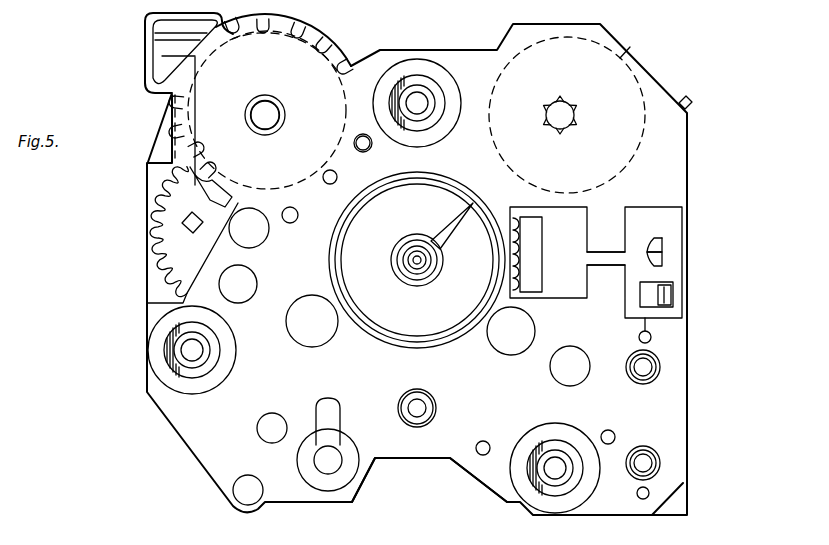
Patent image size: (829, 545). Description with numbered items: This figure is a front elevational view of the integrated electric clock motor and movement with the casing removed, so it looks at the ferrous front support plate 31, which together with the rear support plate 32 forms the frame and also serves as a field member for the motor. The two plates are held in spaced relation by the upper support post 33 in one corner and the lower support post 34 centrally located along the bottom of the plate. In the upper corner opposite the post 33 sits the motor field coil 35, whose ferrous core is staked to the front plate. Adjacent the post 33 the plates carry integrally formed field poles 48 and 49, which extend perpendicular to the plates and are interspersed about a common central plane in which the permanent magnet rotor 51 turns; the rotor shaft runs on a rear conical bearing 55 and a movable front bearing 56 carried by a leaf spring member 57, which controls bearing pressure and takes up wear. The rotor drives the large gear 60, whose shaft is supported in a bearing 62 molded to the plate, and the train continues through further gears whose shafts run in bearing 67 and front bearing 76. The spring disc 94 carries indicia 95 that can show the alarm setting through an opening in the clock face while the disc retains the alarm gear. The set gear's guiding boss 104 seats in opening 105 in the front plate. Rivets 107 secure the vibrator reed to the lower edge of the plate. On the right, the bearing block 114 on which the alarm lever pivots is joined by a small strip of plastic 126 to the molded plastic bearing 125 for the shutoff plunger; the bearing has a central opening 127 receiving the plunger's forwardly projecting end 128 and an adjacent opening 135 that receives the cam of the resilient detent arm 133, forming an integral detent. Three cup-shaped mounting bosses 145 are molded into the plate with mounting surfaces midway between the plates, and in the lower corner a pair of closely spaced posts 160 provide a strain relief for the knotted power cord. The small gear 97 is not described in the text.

The front support plate 31 is at (679, 132).
The rear support plate 32 is at (422, 488).
The upper support post 33 is at (163, 60).
The lower support post 34 is at (322, 473).
The motor field coil 35 is at (626, 51).
The field poles 48 is at (193, 147).
The field poles 49 is at (170, 132).
The permanent magnet rotor 51 is at (365, 152).
The rear conical bearing 55 is at (263, 96).
The movable bearing 56 is at (262, 134).
The leaf spring member 57 is at (245, 108).
The large gear 60 is at (180, 243).
The bearing 62 is at (264, 246).
The bearing 67 is at (317, 332).
The front bearing 76 is at (503, 340).
The spring disc 94 is at (397, 326).
The indicia 95 is at (452, 223).
The pinion 97 is at (565, 122).
The guiding boss 104 is at (426, 410).
The opening 105 is at (418, 426).
The rivets 107 is at (648, 455).
The bearing block 114 is at (565, 297).
The plastic bearing 125 is at (640, 217).
The strip of plastic 126 is at (600, 253).
The central opening 127 is at (662, 260).
The forwardly projecting end 128 is at (662, 242).
The detent arm 133 is at (673, 290).
The opening 135 is at (673, 305).
The mounting bosses 145 is at (423, 78).
The posts 160 is at (248, 485).